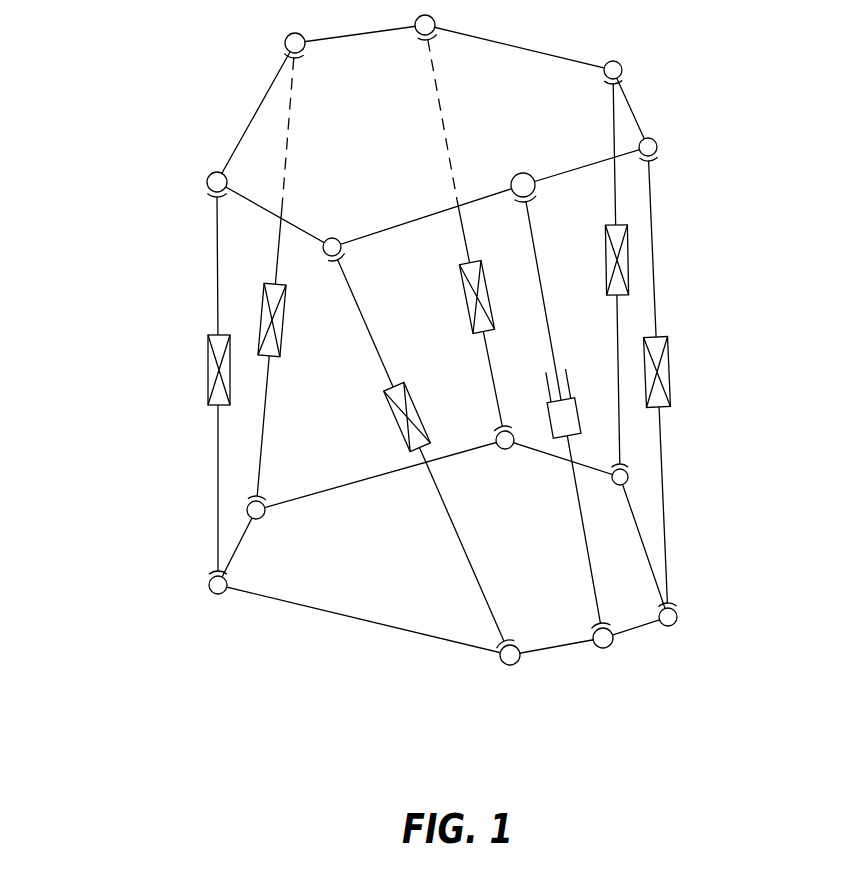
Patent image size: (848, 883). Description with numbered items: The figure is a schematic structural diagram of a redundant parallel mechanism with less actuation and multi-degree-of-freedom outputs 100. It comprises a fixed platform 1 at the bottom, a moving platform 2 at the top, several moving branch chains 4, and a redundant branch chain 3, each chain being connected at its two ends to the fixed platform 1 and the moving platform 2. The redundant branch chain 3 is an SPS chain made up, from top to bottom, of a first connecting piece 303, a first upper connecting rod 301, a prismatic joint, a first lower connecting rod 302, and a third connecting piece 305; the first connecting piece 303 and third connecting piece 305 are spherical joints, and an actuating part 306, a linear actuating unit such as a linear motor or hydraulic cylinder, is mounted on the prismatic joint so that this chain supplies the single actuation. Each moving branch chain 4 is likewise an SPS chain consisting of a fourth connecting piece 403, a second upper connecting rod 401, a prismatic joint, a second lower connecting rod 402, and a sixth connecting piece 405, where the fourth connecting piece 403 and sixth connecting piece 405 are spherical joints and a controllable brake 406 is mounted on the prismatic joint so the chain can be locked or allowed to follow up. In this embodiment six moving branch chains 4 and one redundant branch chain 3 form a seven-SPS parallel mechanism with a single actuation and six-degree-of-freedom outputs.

The redundant parallel mechanism with less actuation and multi-degree-of-freedom out 100 is at (650, 117).
The fixed platform 1 is at (417, 563).
The moving platform 2 is at (365, 110).
The redundant branch chain 3 is at (595, 558).
The moving branch chain 4 is at (213, 500).
The first upper connecting rod 301 is at (548, 320).
The first lower connecting rod 302 is at (580, 483).
The first connecting piece 303 is at (537, 190).
The third connecting piece 305 is at (617, 643).
The actuating part 306 is at (583, 418).
The second upper connecting rod 401 is at (217, 270).
The second lower connecting rod 402 is at (218, 445).
The fourth connecting piece 403 is at (207, 175).
The sixth connecting piece 405 is at (209, 590).
The brake 406 is at (208, 367).